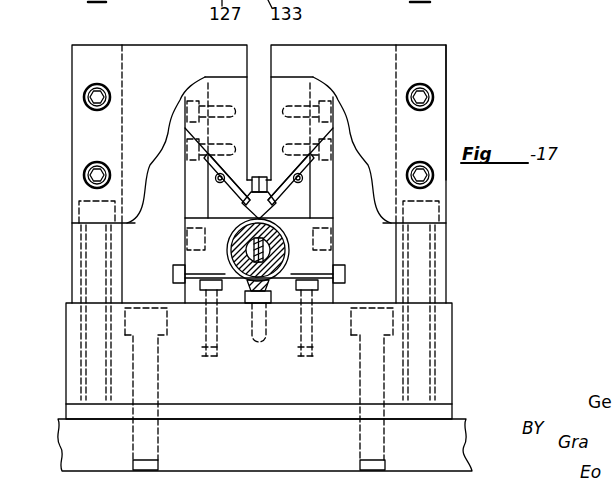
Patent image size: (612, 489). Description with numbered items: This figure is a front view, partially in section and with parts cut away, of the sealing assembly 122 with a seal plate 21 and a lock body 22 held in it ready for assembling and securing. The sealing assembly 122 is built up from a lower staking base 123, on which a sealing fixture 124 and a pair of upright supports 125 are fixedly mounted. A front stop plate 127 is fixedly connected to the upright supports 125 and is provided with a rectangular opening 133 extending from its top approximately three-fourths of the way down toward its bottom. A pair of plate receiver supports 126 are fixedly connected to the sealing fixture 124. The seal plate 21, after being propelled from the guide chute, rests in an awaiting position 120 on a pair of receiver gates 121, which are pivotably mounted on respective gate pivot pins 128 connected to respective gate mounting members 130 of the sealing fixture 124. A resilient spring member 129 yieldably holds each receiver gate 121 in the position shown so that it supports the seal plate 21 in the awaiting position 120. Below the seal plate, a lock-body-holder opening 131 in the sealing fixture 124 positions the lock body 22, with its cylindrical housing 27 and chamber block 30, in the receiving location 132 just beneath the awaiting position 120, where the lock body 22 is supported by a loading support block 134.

The sealing assembly 122 is at (74, 32).
The front stop plate 127 is at (145, 51).
The rectangular opening 133 is at (249, 101).
The plate receiver supports 126 is at (194, 167).
The gate mounting members 130 is at (200, 90).
The resilient spring member 129 is at (228, 193).
The receiver gates 121 is at (245, 198).
The gate pivot pins 128 is at (214, 177).
The seal plate 21 is at (259, 176).
The receiving location 132 is at (238, 217).
The awaiting position 120 is at (215, 234).
The chamber block 30 is at (307, 234).
The lock-body-holder opening 131 is at (227, 254).
The lock body 22 is at (226, 265).
The loading support block 134 is at (250, 292).
The cylindrical housing 27 is at (290, 257).
The sealing fixture 124 is at (297, 273).
The upright supports 125 is at (80, 256).
The lower staking base 123 is at (78, 353).